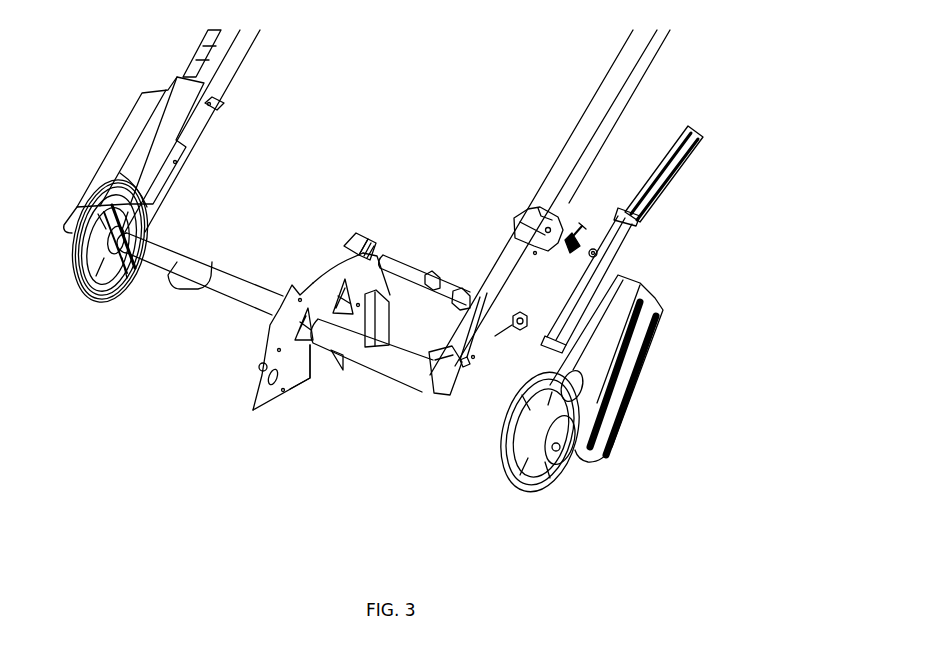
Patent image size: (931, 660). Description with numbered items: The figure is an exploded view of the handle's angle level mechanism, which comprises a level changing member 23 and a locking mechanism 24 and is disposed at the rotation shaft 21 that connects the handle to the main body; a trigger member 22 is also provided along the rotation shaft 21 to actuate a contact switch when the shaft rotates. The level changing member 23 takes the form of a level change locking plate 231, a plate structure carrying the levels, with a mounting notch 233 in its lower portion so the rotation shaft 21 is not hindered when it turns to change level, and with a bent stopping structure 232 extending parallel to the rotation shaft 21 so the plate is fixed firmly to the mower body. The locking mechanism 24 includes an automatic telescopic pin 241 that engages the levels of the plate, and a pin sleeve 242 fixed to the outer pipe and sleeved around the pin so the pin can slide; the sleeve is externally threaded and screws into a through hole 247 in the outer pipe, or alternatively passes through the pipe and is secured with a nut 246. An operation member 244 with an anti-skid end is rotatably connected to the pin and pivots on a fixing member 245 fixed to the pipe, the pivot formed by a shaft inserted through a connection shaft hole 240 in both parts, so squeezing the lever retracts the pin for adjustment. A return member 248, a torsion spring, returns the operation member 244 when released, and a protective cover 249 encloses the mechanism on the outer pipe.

The rotation shaft 21 is at (158, 228).
The trigger member 22 is at (203, 270).
The level changing member 23 is at (334, 301).
The level change locking plate 231 is at (323, 268).
The stopping structure 232 is at (357, 235).
The mounting notch 233 is at (310, 355).
The locking mechanism 24 is at (571, 270).
The connection shaft hole 240 is at (595, 250).
The automatic telescopic pin 241 is at (446, 239).
The pin sleeve 242 is at (452, 281).
The operation member 244 is at (628, 236).
The fixing member 245 is at (526, 216).
The nut 246 is at (516, 331).
The through hole 247 is at (447, 376).
The return member 248 is at (569, 250).
The protective cover 249 is at (621, 418).